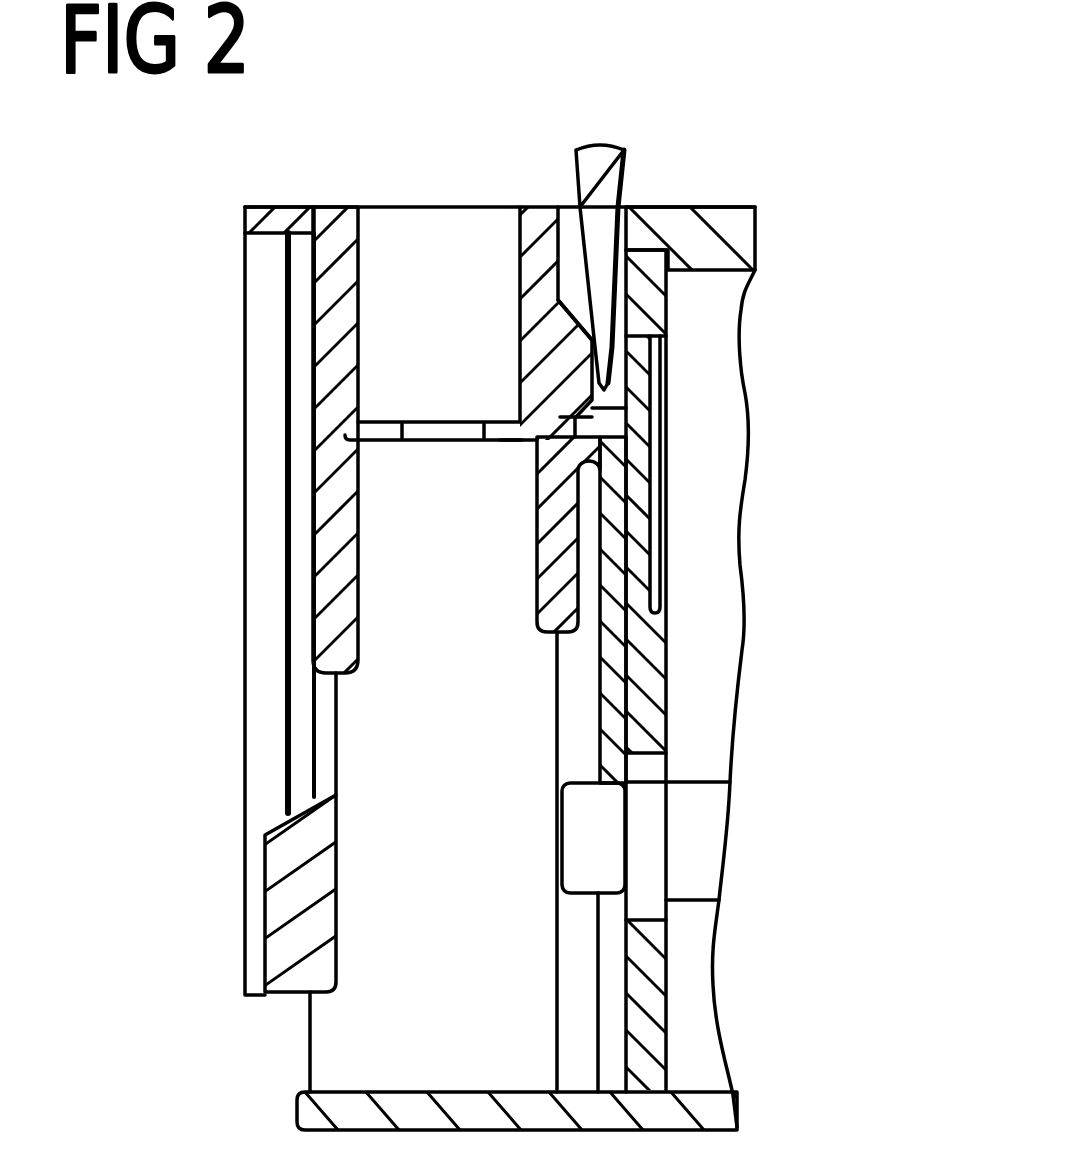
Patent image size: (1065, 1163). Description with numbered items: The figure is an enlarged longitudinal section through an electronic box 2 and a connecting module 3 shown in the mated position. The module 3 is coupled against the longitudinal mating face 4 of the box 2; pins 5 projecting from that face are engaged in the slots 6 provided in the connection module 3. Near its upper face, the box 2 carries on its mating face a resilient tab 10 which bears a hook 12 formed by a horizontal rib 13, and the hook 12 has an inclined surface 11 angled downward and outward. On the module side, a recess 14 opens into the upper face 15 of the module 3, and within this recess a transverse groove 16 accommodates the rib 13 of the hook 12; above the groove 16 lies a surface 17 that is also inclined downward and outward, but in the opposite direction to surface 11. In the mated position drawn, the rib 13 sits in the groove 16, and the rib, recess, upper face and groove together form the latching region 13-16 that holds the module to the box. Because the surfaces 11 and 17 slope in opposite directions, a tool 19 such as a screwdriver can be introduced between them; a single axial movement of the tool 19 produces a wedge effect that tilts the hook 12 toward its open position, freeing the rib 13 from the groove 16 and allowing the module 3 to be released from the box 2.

The electronic box 2 is at (704, 178).
The connecting module 3 is at (238, 665).
The longitudinal mating face 4 is at (600, 685).
The pins 5 is at (583, 847).
The slots 6 is at (610, 978).
The resilient tab 10 is at (637, 545).
The inclined surface 11 is at (603, 382).
The hook 12 is at (666, 430).
The rib and groove latching region 13-16 is at (465, 323).
The horizontal rib 13 is at (433, 323).
The recess 14 is at (433, 323).
The upper face 15 is at (433, 323).
The transverse groove 16 is at (433, 323).
The inclined surface 17 is at (605, 380).
The tool 19 is at (578, 165).